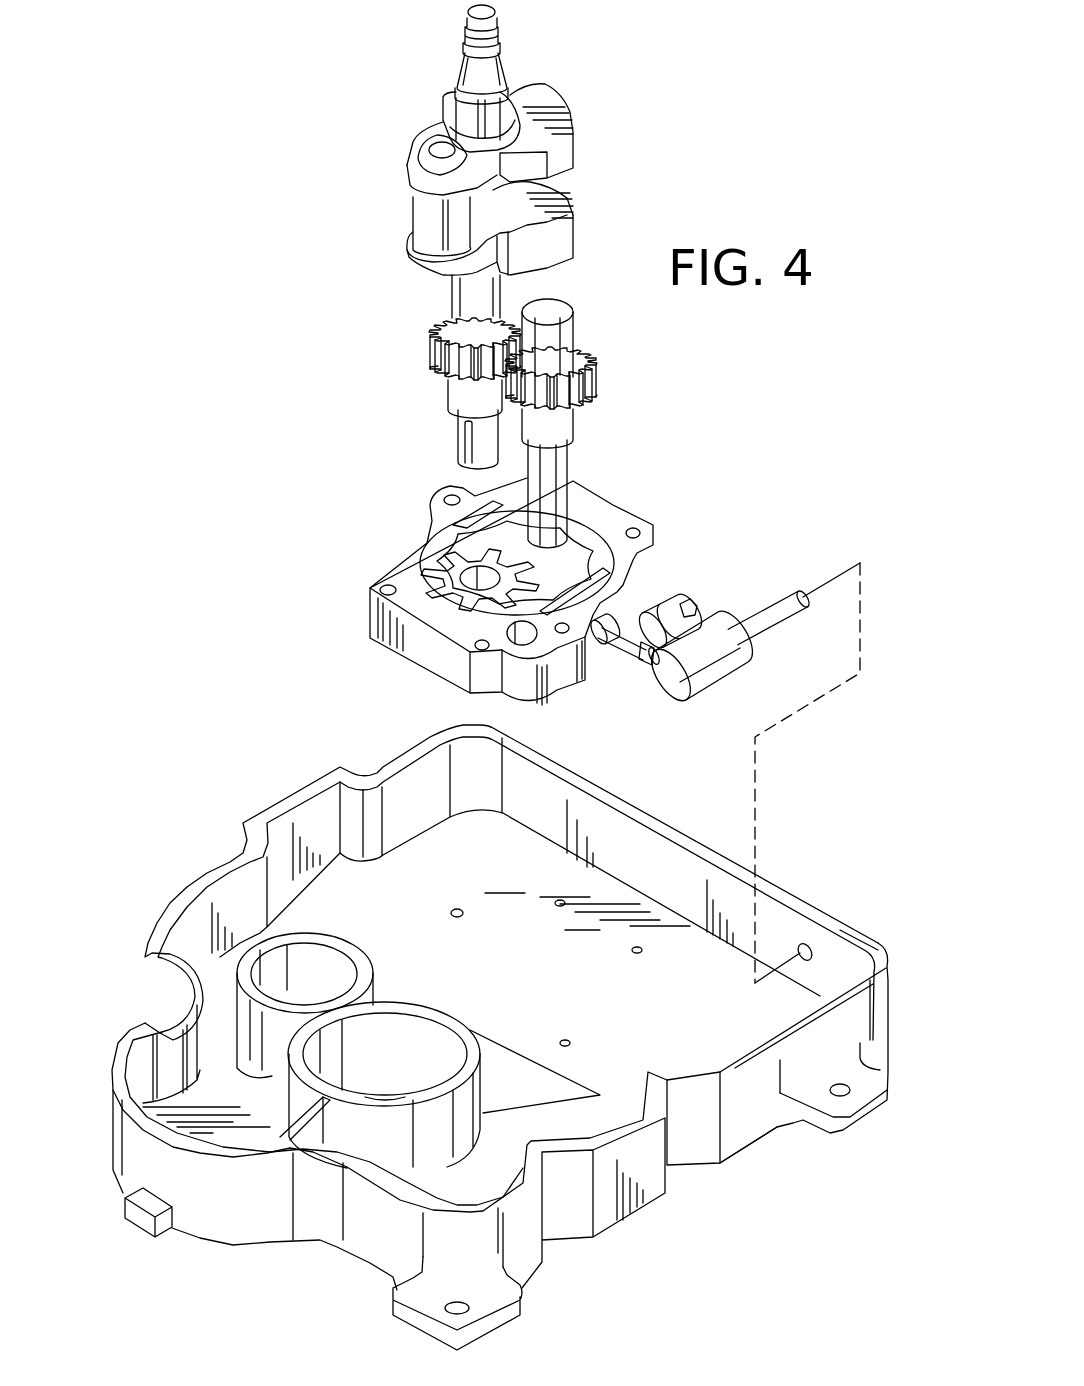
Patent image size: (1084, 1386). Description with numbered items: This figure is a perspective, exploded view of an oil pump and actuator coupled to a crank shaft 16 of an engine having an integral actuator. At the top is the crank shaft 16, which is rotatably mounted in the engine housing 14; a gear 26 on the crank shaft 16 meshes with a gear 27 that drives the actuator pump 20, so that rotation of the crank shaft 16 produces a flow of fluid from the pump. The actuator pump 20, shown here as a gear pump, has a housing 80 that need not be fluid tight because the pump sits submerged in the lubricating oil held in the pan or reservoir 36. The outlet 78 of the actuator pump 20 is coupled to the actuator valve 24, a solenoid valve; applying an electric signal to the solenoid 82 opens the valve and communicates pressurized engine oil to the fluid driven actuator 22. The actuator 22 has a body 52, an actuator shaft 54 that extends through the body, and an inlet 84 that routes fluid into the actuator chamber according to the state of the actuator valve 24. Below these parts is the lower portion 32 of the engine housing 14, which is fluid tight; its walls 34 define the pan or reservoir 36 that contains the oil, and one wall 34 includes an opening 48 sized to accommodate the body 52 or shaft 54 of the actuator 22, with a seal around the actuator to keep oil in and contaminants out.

The engine housing 14 is at (207, 845).
The crank shaft 16 is at (413, 144).
The actuator pump 20 is at (364, 591).
The fluid driven actuator 22 is at (772, 578).
The actuator valve 24 is at (678, 604).
The gear 26 is at (433, 322).
The gear 27 is at (586, 367).
The lower portion 32 is at (185, 1190).
The wall 34 is at (840, 947).
The pan or reservoir 36 is at (455, 845).
The opening 48 is at (806, 940).
The body 52 is at (717, 680).
The actuator shaft 54 is at (790, 628).
The outlet 78 is at (613, 647).
The housing 80 is at (404, 556).
The solenoid 82 is at (694, 603).
The inlet 84 is at (643, 662).